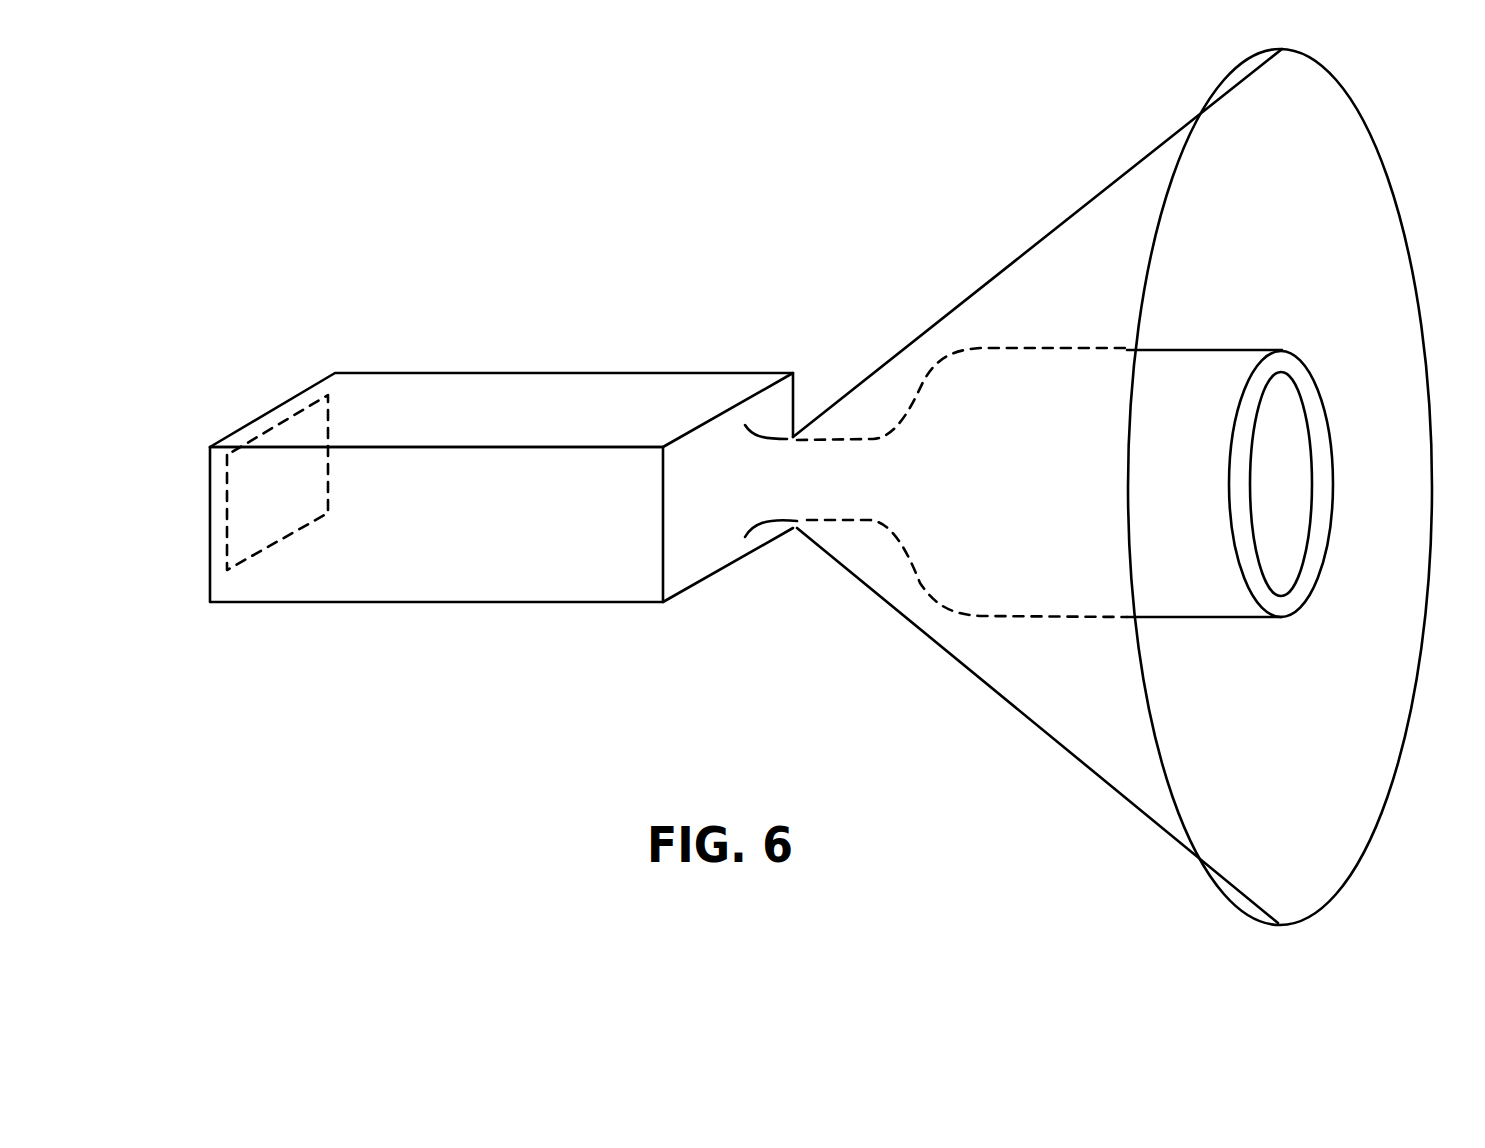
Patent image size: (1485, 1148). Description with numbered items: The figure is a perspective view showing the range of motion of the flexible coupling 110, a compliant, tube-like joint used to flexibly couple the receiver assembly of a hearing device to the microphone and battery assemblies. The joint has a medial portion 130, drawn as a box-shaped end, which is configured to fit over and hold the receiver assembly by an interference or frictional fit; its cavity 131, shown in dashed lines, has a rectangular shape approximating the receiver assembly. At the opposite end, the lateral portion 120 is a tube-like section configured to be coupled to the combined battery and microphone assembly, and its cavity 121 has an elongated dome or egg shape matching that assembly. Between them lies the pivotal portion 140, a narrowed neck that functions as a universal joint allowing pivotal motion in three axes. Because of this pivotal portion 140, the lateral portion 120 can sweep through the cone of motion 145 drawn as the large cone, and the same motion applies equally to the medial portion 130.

The flexible coupling 110 is at (480, 636).
The medial portion 130 is at (518, 372).
The cavity 131 is at (242, 494).
The pivotal portion 140 is at (797, 490).
The lateral portion 120 is at (1243, 348).
The cavity 121 is at (1280, 492).
The cone of motion 145 is at (1108, 180).